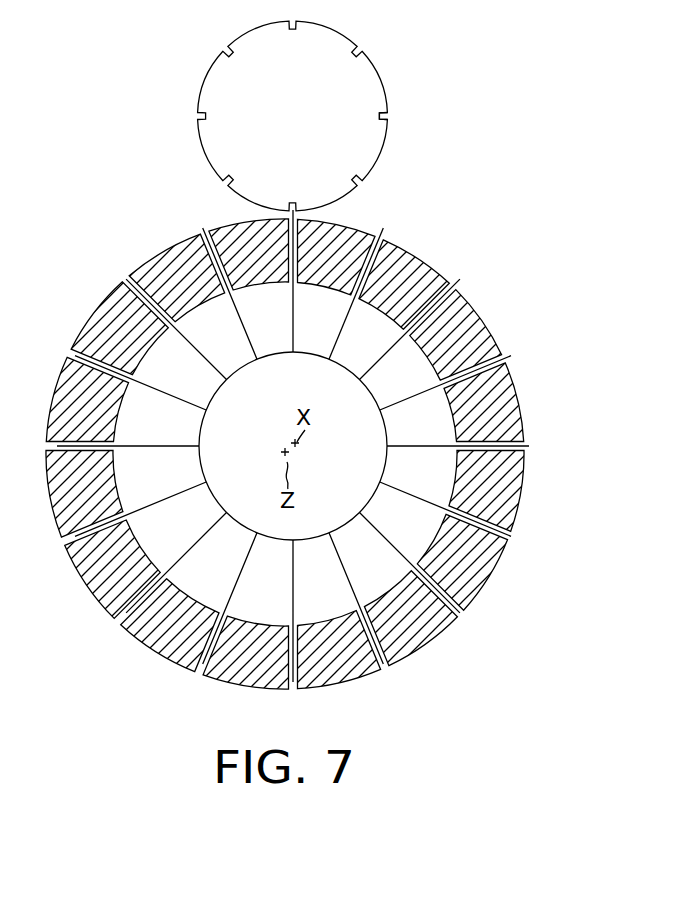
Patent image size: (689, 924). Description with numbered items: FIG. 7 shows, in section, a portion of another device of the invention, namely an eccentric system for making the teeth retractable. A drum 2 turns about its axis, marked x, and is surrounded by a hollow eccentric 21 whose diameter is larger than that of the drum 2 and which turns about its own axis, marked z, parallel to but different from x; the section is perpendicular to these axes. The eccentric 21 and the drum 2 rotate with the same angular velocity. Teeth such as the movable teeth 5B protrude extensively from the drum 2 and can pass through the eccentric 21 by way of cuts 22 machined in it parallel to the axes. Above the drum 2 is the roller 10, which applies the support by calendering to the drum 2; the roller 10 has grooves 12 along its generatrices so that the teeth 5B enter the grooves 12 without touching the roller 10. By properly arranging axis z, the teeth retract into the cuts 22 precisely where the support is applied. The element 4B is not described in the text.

The roller 10 is at (378, 73).
The grooves 12 is at (388, 116).
The drum 2 is at (386, 424).
The hollow eccentric 21 is at (309, 444).
The cuts 22 is at (381, 281).
The pole tooth 4B is at (458, 283).
The movable teeth 5B is at (509, 538).